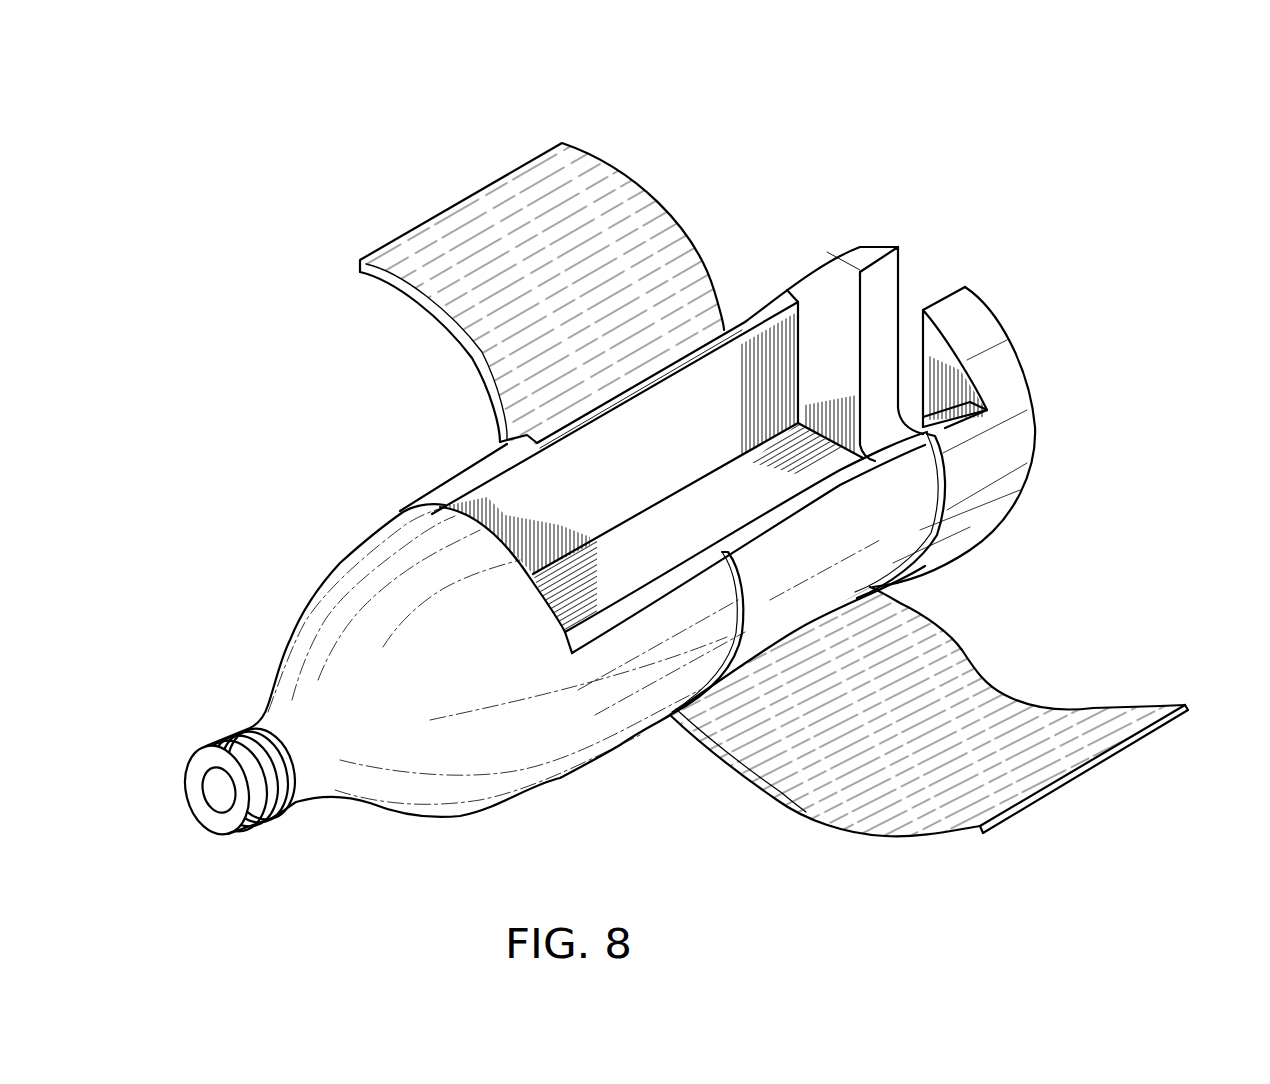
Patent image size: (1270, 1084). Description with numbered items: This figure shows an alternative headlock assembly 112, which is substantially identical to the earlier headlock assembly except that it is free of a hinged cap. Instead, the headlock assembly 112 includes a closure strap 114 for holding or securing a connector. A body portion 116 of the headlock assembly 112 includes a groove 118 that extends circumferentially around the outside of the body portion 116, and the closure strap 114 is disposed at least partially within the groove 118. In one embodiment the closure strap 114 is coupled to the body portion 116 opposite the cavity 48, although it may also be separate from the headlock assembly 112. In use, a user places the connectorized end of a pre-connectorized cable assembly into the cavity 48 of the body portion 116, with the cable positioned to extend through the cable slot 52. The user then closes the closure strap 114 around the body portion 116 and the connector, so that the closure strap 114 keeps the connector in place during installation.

The headlock assembly 112 is at (810, 140).
The cavity 48 is at (745, 362).
The cable slot 52 is at (928, 287).
The closure strap 114 is at (1128, 713).
The body portion 116 is at (610, 727).
The groove 118 is at (905, 546).